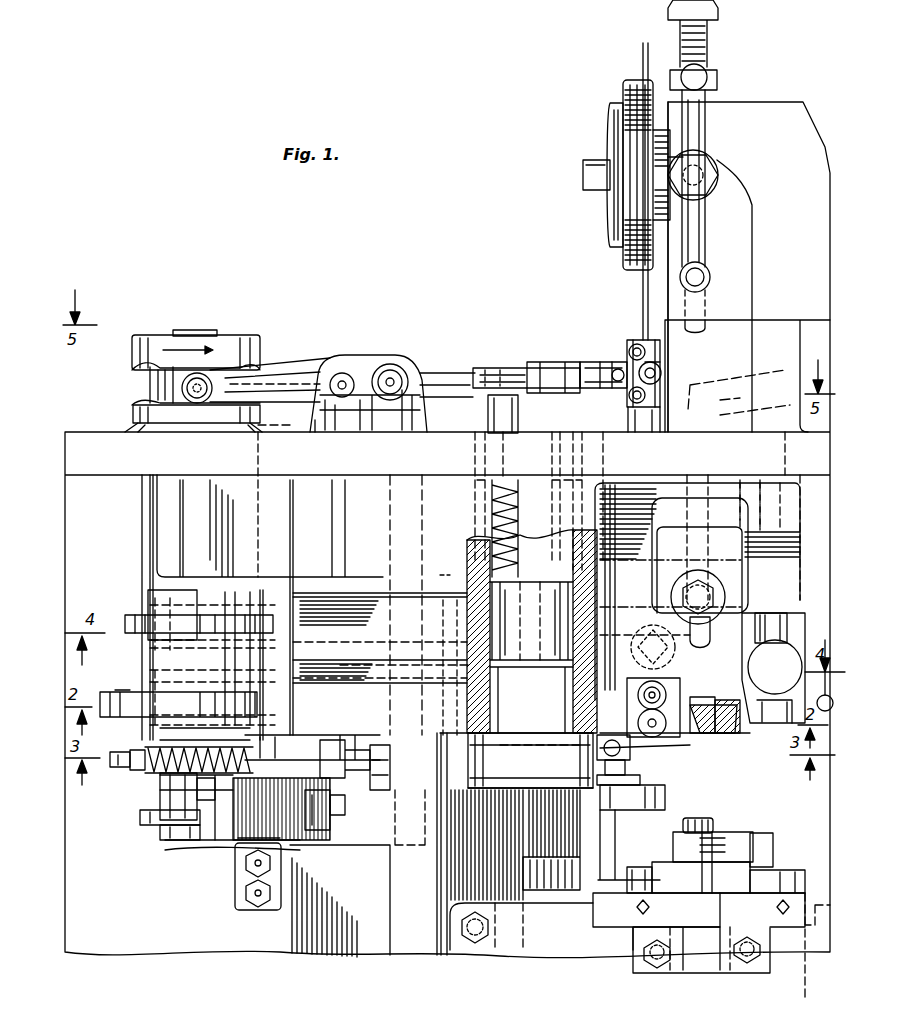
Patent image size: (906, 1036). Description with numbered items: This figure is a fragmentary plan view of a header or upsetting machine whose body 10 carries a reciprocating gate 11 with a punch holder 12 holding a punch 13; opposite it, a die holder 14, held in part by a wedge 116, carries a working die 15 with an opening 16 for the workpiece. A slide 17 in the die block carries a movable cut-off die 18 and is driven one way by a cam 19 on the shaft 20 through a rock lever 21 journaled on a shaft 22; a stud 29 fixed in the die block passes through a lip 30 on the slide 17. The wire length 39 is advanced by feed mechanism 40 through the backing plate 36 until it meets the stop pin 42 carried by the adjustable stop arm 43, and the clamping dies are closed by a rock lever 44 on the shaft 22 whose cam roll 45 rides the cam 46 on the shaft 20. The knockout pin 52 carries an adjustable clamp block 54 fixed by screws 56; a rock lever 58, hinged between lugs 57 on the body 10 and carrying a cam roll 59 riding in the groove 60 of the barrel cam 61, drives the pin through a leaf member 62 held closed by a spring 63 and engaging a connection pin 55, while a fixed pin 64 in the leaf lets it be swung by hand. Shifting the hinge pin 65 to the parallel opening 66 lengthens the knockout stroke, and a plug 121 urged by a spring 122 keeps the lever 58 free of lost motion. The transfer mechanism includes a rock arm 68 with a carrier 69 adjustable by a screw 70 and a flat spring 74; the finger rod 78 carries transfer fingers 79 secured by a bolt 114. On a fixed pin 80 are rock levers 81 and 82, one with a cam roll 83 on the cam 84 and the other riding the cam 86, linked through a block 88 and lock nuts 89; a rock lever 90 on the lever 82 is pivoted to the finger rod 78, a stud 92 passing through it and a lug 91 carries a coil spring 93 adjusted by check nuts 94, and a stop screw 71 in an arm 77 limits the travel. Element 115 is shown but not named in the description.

The body 10 is at (118, 930).
The reciprocating gate 11 is at (618, 943).
The punch holder 12 is at (730, 845).
The punch 13 is at (715, 825).
The die holder 14 is at (752, 655).
The working die 15 is at (712, 733).
The opening 16 is at (705, 735).
The slide 17 is at (592, 703).
The cut-off die 18 is at (140, 690).
The cam 19 is at (128, 692).
The shaft 20 is at (215, 333).
The rock lever 21 is at (372, 665).
The shaft 22 is at (422, 545).
The stud 29 is at (640, 690).
The lip 30 is at (632, 625).
The backing plate 36 is at (653, 617).
The wire length 39 is at (645, 283).
The feed mechanism 40 is at (626, 260).
The stop pin 42 is at (665, 790).
The stop arm 43 is at (650, 812).
The rock lever 44 is at (342, 586).
The cam roll 45 is at (140, 603).
The cam 46 is at (138, 610).
The knockout pin 52 is at (638, 420).
The clamp block 54 is at (644, 340).
The connection pin 55 is at (662, 372).
The screws 56 is at (633, 348).
The lugs 57 is at (383, 356).
The rock lever 58 is at (302, 360).
The cam roll 59 is at (165, 400).
The groove 60 is at (150, 378).
The barrel cam 61 is at (133, 357).
The leaf member 62 is at (660, 362).
The spring 63 is at (553, 366).
The fixed pin 64 is at (614, 368).
The pin 65 is at (400, 368).
The parallel opening 66 is at (344, 374).
The rock arm 68 is at (532, 765).
The carrier 69 is at (625, 765).
The screw 70 is at (630, 750).
The stop screw 71 is at (320, 825).
The flat spring 74 is at (618, 795).
The arm 77 is at (340, 815).
The finger rod 78 is at (392, 748).
The transfer fingers 79 is at (695, 745).
The fixed pin 80 is at (293, 580).
The rock lever 81 is at (170, 838).
The rock lever 82 is at (248, 830).
The cam roll 83 is at (160, 828).
The cam 84 is at (160, 815).
The cam 86 is at (145, 748).
The block 88 is at (165, 777).
The lock nuts 89 is at (200, 780).
The rock lever 90 is at (330, 738).
The lug 91 is at (285, 738).
The stud 92 is at (115, 767).
The coil spring 93 is at (160, 733).
The check nuts 94 is at (135, 770).
The bolt 114 is at (710, 470).
The passage 115 is at (727, 372).
The wedge 116 is at (750, 715).
The plug 121 is at (487, 410).
The spring 122 is at (490, 480).